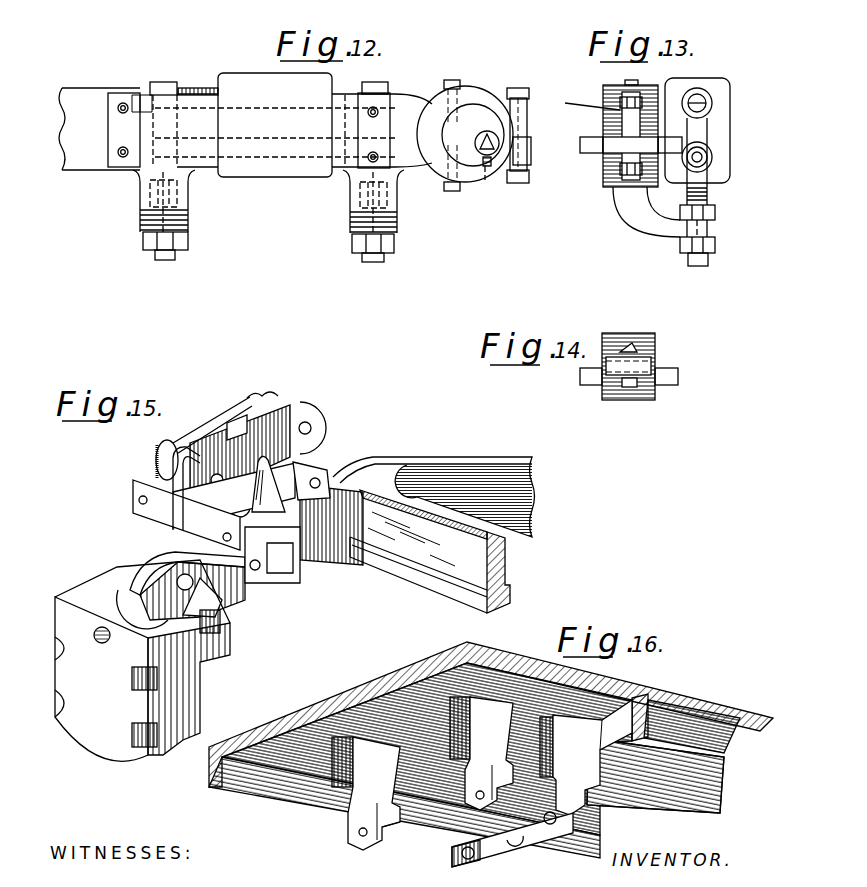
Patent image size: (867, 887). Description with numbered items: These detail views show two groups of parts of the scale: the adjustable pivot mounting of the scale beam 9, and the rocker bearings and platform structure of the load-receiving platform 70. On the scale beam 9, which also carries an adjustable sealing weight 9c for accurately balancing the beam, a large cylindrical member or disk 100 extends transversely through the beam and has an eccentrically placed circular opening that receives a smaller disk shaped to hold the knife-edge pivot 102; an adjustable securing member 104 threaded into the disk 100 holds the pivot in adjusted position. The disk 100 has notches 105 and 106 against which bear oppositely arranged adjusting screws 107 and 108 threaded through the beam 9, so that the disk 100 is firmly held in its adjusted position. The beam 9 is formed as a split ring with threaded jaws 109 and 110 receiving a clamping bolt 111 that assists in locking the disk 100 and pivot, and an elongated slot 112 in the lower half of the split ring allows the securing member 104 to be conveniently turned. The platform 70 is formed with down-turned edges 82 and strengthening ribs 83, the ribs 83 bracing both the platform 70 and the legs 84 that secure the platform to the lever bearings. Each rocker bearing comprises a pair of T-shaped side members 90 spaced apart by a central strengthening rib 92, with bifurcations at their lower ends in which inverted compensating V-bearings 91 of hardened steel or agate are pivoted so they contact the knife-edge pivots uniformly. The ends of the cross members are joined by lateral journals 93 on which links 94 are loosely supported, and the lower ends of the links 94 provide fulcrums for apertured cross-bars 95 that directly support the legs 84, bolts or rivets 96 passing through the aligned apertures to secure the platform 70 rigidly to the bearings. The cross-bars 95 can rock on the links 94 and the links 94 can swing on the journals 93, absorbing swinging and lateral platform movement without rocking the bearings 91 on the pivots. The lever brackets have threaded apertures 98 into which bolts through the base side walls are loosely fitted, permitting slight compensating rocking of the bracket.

In FIG. 12, the scale beam 9 is at (83, 94).
In FIG. 12, the adjustable sealing weight 9c is at (246, 78).
In FIG. 13, the adjustable sealing weight 9c is at (729, 92).
In FIG. 12, the large cylindrical member or disk 100 is at (476, 111).
In FIG. 14, the large cylindrical member or disk 100 is at (657, 347).
In FIG. 13, the knife-edge pivot 102 is at (595, 141).
In FIG. 14, the knife-edge pivot 102 is at (670, 382).
In FIG. 12, the adjustable securing member 104 is at (489, 160).
In FIG. 14, the notch 105 is at (630, 346).
In FIG. 14, the notch 106 is at (630, 389).
In FIG. 12, the adjusting screw 107 is at (455, 80).
In FIG. 12, the adjusting screw 108 is at (453, 192).
In FIG. 12, the threaded jaw 109 is at (529, 114).
In FIG. 12, the threaded jaw 110 is at (531, 160).
In FIG. 12, the clamping bolt 111 is at (525, 93).
In FIG. 12, the elongated slot 112 is at (484, 178).
In FIG. 16, the load-receiving platform 70 is at (300, 710).
In FIG. 16, the down-turned edge 82 is at (263, 792).
In FIG. 16, the strengthening rib 83 is at (720, 782).
In FIG. 16, the leg 84 is at (352, 823).
In FIG. 15, the T-shaped side member 90 is at (314, 443).
In FIG. 15, the inverted compensating V-bearing 91 is at (288, 562).
In FIG. 15, the central strengthening rib 92 is at (232, 426).
In FIG. 15, the lateral journal 93 is at (310, 429).
In FIG. 15, the link 94 is at (184, 455).
In FIG. 15, the apertured cross-bar 95 is at (134, 484).
In FIG. 16, the apertured cross-bar 95 is at (508, 857).
In FIG. 16, the bolt or rivet 96 is at (552, 824).
In FIG. 15, the threaded aperture 98 is at (94, 636).